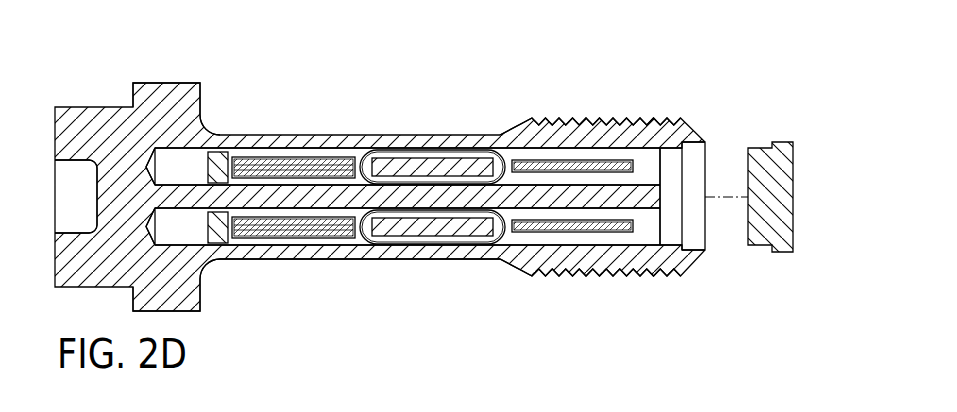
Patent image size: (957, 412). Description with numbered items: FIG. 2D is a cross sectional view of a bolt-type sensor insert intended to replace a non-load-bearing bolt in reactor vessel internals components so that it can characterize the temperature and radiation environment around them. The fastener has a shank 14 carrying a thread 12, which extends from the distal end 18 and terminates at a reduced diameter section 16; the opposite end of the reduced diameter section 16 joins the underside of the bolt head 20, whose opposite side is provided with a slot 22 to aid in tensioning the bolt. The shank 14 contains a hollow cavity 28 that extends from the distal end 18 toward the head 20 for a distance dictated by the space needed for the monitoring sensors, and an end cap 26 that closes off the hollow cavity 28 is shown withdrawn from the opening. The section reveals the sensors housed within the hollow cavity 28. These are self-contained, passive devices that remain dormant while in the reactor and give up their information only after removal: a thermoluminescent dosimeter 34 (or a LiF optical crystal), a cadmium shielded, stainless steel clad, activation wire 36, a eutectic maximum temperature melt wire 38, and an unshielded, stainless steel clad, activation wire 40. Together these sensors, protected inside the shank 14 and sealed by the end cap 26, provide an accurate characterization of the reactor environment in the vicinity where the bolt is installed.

The thread 12 is at (633, 120).
The shank 14 is at (268, 260).
The reduced diameter section 16 is at (410, 260).
The distal end 18 is at (698, 160).
The bolt head 20 is at (170, 82).
The slot 22 is at (75, 172).
The end cap 26 is at (767, 243).
The hollow cavity 28 is at (650, 165).
The thermoluminescent dosimeter 34 is at (220, 150).
The cadmium shielded, stainless steel clad, activation wire 36 is at (308, 158).
The eutectic maximum temperature melt wire 38 is at (412, 160).
The unshielded, stainless steel clad, activation wire 40 is at (547, 160).